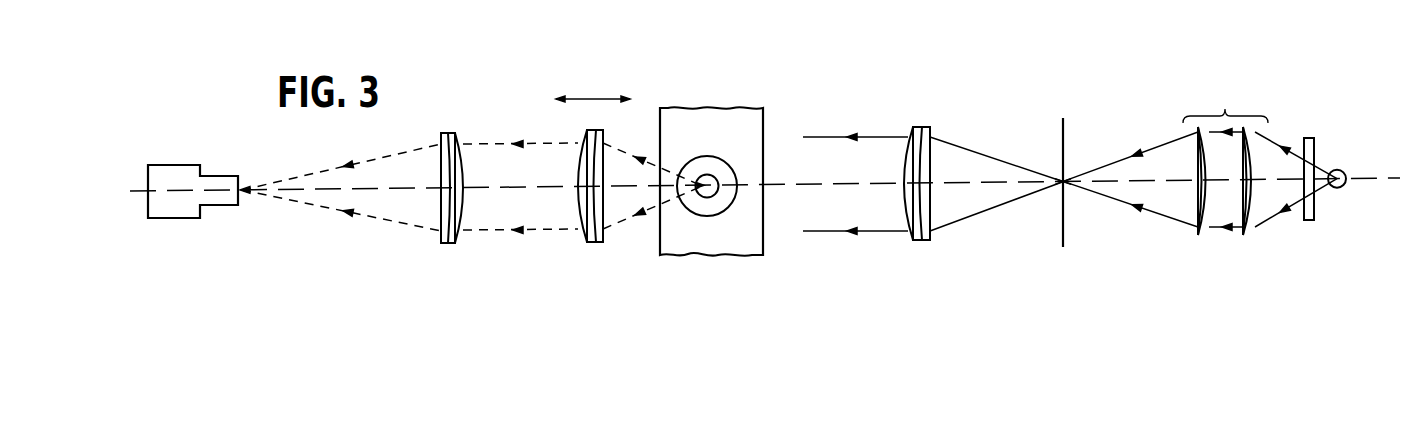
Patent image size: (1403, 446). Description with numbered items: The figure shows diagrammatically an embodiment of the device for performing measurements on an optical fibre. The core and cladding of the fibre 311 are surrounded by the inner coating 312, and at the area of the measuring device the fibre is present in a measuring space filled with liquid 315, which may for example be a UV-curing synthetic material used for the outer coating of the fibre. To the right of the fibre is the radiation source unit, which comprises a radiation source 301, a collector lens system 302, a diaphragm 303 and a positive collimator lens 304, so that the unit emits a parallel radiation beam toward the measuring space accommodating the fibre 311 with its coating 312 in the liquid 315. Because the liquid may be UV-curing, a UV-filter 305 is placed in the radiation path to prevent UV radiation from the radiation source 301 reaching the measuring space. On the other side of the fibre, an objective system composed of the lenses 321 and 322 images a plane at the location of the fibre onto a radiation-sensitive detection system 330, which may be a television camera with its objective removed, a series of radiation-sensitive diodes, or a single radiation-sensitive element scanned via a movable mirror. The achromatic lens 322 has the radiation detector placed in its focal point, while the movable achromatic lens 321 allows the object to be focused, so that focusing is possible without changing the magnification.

The radiation source 301 is at (1340, 169).
The collector lens system 302 is at (1225, 153).
The diaphragm 303 is at (1067, 177).
The positive collimator lens 304 is at (921, 127).
The UV-filter 305 is at (1308, 138).
The core and cladding of the fibre 311 is at (715, 176).
The inner coating 312 is at (700, 157).
The liquid 315 is at (753, 108).
The movable achromatic lens 321 is at (593, 247).
The achromatic lens 322 is at (444, 246).
The radiation-sensitive detection system 330 is at (168, 170).